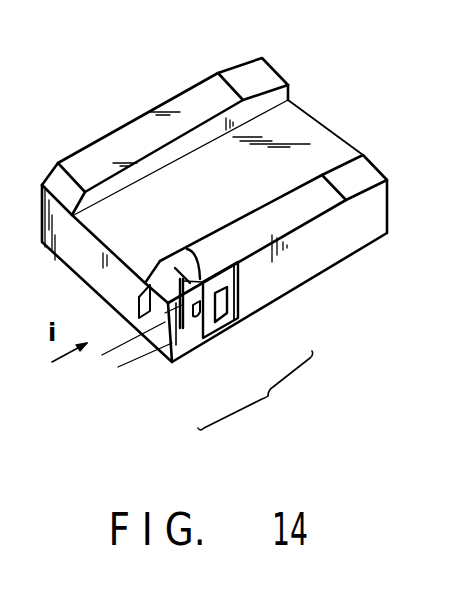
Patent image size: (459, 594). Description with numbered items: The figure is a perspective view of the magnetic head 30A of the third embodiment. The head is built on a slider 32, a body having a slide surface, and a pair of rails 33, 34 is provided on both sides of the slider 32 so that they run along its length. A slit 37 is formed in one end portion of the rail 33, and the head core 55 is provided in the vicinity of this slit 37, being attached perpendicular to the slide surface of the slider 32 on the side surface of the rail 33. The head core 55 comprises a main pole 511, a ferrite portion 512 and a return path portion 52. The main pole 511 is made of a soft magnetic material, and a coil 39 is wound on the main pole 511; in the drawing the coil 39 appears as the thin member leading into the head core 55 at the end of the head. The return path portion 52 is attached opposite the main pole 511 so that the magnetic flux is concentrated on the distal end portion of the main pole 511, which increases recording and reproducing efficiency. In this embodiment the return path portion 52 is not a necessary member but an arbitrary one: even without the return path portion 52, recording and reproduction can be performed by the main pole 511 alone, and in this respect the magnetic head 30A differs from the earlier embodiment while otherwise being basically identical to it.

The magnetic head 30A is at (283, 63).
The slider 32 is at (303, 129).
The rail 33 is at (313, 200).
The rail 34 is at (135, 128).
The slit 37 is at (133, 302).
The coil 39 is at (130, 362).
The return path portion 52 is at (234, 323).
The head core 55 is at (255, 391).
The main pole 511 is at (198, 278).
The ferrite portion 512 is at (200, 345).